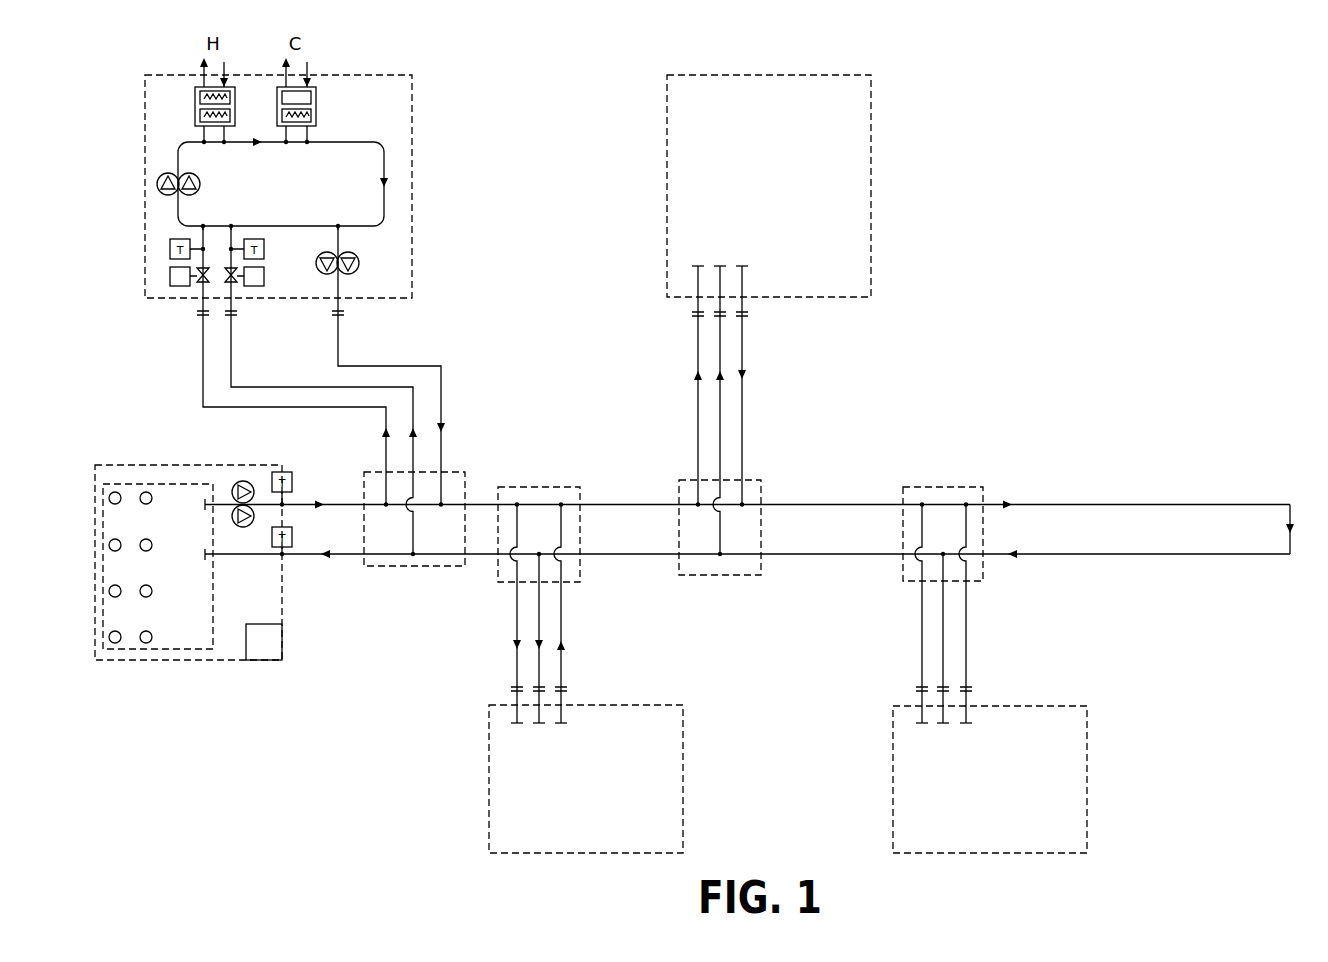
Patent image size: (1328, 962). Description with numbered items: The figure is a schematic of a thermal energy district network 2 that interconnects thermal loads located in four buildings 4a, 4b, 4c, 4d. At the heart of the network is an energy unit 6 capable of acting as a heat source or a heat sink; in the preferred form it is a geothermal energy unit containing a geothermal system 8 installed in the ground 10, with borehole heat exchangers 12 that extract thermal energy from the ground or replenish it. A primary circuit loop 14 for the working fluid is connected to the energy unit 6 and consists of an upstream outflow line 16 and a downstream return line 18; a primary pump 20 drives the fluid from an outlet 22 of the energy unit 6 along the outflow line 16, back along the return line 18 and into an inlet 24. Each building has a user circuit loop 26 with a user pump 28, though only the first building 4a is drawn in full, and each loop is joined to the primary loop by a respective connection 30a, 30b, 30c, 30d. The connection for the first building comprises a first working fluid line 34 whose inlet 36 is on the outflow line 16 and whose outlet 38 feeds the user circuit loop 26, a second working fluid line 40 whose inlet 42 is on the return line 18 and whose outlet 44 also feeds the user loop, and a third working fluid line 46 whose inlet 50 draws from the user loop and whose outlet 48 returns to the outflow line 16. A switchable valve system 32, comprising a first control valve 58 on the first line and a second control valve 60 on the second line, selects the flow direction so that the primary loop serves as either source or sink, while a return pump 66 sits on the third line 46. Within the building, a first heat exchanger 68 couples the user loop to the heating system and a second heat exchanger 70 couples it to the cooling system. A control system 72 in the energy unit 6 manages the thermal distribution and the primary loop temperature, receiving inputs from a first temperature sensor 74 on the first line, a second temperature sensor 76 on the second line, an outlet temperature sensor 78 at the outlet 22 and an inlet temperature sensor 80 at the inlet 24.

The thermal energy district network 2 is at (378, 744).
The building 4a is at (412, 186).
The building 4b is at (683, 780).
The building 4c is at (871, 185).
The building 4d is at (1087, 780).
The energy unit 6 is at (222, 661).
The geothermal system 8 is at (122, 650).
The ground 10 is at (176, 684).
The borehole heat exchanger 12 is at (146, 492).
The primary circuit loop 14 is at (1129, 503).
The upstream outflow line 16 is at (1055, 503).
The downstream return line 18 is at (1137, 556).
The primary pump 20 is at (243, 481).
The outlet 22 is at (284, 506).
The inlet 24 is at (284, 556).
The user circuit loop 26 is at (178, 150).
The user pump 28 is at (157, 185).
The connection 30a is at (446, 401).
The connection 30b is at (583, 649).
The connection 30c is at (766, 393).
The connection 30d is at (978, 649).
The switchable valve system 32 is at (182, 356).
The first working fluid line 34 is at (203, 388).
The inlet 36 is at (386, 506).
The outlet 38 is at (208, 229).
The second working fluid line 40 is at (231, 359).
The inlet 42 is at (413, 556).
The outlet 44 is at (237, 229).
The third working fluid line 46 is at (338, 328).
The outlet 48 is at (441, 506).
The inlet 50 is at (340, 230).
The first control valve 58 is at (199, 283).
The second control valve 60 is at (235, 283).
The return pump 66 is at (359, 263).
The first heat exchanger 68 is at (195, 107).
The second heat exchanger 70 is at (316, 107).
The control system 72 is at (258, 660).
The first temperature sensor 74 is at (170, 249).
The second temperature sensor 76 is at (264, 249).
The outlet temperature sensor 78 is at (292, 482).
The inlet temperature sensor 80 is at (272, 537).